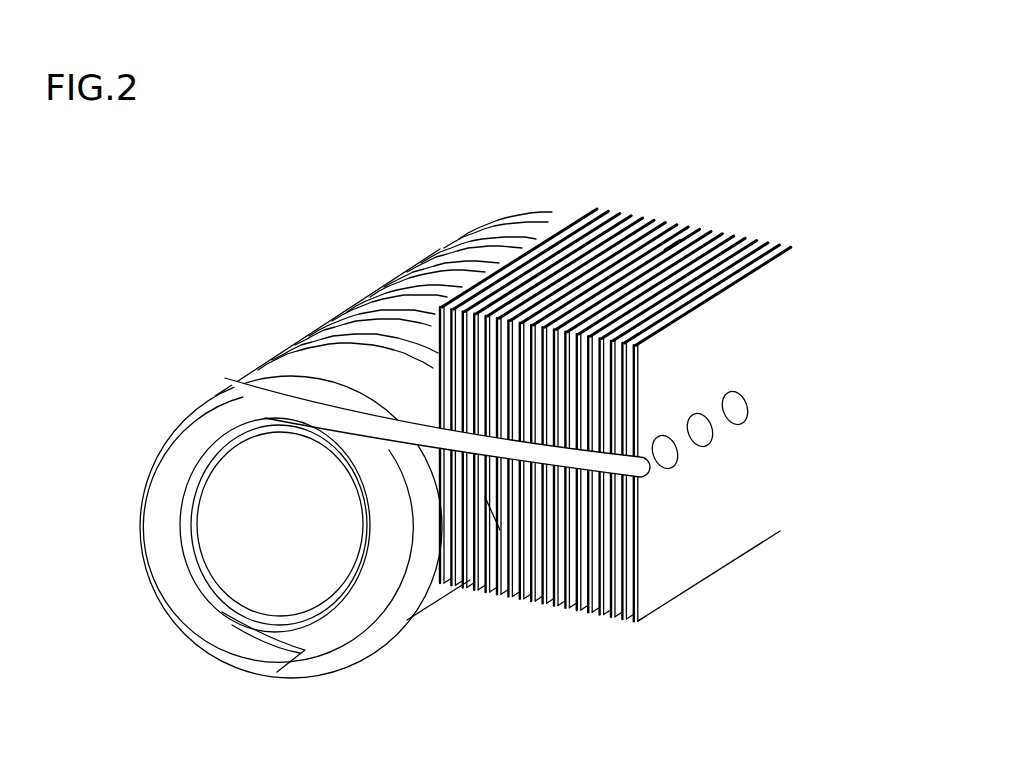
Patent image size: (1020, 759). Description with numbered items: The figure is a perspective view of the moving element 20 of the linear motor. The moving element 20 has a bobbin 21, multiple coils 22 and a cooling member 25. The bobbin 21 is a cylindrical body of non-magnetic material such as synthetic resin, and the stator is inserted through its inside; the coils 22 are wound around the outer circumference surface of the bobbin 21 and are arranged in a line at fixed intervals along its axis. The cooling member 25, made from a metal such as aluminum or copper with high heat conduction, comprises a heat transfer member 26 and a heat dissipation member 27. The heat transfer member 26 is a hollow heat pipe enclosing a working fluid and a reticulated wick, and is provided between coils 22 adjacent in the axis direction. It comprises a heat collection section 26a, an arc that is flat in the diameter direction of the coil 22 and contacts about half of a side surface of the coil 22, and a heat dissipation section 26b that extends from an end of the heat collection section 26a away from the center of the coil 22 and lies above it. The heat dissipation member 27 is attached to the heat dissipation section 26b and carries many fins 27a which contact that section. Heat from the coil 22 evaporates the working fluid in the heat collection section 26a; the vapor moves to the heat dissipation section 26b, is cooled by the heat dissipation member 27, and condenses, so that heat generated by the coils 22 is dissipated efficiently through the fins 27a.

The moving element 20 is at (395, 114).
The bobbin 21 is at (314, 621).
The coil 22 is at (355, 633).
The cooling member 25 is at (543, 143).
The heat transfer member 26 is at (404, 411).
The heat collection section 26a is at (221, 628).
The heat dissipation section 26b is at (498, 535).
The heat dissipation member 27 is at (579, 257).
The fin 27a is at (669, 246).